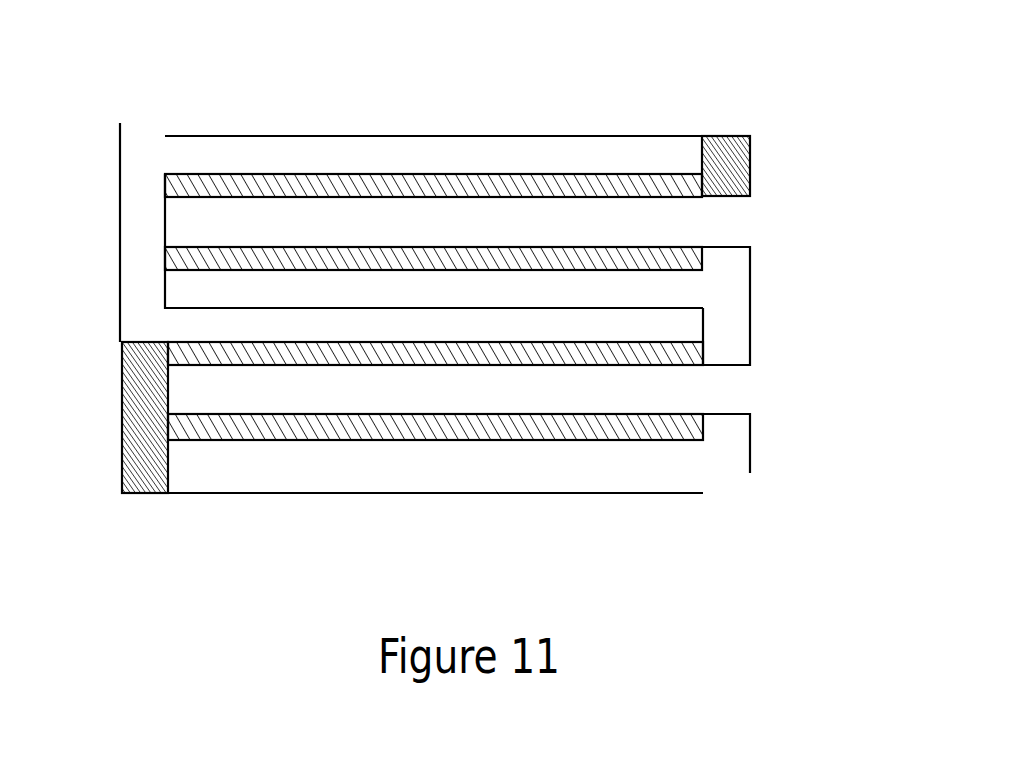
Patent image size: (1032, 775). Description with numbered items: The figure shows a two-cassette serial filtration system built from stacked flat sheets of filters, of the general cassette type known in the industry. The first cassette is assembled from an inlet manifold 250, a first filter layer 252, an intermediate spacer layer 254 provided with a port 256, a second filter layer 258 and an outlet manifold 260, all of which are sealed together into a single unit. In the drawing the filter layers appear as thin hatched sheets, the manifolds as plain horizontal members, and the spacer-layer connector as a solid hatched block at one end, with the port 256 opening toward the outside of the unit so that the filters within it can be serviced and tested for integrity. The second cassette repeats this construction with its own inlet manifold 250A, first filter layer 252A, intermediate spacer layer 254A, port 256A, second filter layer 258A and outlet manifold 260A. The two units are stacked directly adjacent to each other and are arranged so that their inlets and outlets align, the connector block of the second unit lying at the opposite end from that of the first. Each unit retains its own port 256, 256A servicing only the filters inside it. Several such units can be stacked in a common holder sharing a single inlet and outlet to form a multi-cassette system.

The inlet manifold 250 is at (432, 138).
The first filter layer 252 is at (577, 137).
The intermediate spacer layer 254 is at (640, 218).
The port 256 is at (733, 217).
The second filter layer 258 is at (353, 247).
The outlet manifold 260 is at (732, 301).
The inlet manifold 250A is at (207, 322).
The first filter layer 252A is at (313, 337).
The intermediate spacer layer 254A is at (193, 395).
The port 256A is at (720, 394).
The second filter layer 258A is at (523, 413).
The outlet manifold 260A is at (627, 467).